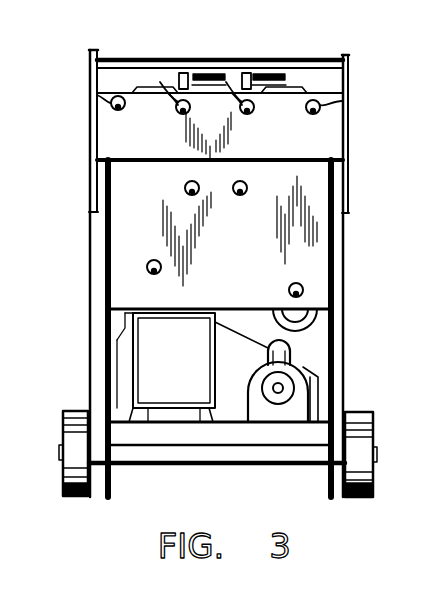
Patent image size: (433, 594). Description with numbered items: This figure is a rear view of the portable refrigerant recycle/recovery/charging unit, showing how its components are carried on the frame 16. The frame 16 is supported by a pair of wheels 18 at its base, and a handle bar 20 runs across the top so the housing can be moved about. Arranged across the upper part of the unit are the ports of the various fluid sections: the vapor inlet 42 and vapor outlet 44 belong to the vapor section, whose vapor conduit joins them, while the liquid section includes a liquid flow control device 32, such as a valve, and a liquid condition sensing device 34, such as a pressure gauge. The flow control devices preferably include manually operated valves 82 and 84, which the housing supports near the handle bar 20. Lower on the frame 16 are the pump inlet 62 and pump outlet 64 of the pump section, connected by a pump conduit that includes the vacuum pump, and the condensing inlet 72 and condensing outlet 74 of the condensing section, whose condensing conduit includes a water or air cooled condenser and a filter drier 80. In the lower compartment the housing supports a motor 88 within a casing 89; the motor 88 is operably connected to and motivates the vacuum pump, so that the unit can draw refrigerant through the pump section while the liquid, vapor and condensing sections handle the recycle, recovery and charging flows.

The frame 16 is at (92, 357).
The wheels 18 is at (60, 473).
The handle bar 20 is at (315, 60).
The liquid flow control device 32 is at (233, 76).
The liquid condition sensing device 34 is at (322, 107).
The vapor inlet 42 is at (110, 105).
The vapor outlet 44 is at (160, 65).
The pump inlet 62 is at (147, 268).
The pump outlet 64 is at (185, 188).
The condensing inlet 72 is at (247, 187).
The condensing outlet 74 is at (303, 291).
The filter drier 80 is at (318, 325).
The manually operated valve 82 is at (267, 65).
The manually operated valve 84 is at (210, 66).
The motor 88 is at (310, 367).
The casing 89 is at (166, 367).